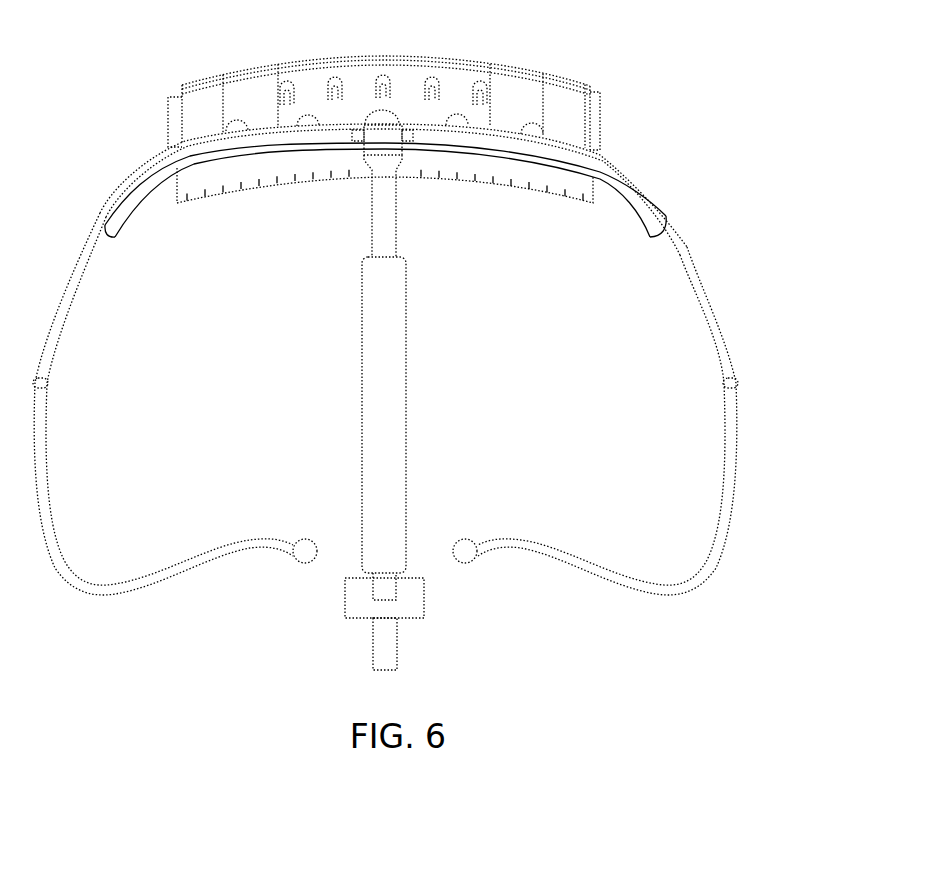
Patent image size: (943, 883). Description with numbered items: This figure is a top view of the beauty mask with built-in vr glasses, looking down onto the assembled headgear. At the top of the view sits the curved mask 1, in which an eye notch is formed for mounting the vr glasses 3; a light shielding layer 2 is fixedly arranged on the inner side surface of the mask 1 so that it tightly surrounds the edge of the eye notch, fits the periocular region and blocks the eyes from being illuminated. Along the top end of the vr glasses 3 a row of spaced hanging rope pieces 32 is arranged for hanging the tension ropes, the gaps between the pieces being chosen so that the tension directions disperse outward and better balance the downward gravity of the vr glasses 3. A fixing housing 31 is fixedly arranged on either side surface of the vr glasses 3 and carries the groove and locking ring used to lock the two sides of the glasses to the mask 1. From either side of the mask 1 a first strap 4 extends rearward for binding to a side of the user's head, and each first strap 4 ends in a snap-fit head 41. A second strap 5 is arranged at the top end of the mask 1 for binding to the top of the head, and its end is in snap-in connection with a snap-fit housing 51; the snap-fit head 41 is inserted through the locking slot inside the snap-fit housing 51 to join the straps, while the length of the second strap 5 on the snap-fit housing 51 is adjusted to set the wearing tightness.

The mask 1 is at (158, 168).
The light shielding layer 2 is at (257, 170).
The vr glasses 3 is at (410, 88).
The fixing housing 31 is at (575, 122).
The hanging rope piece 32 is at (435, 85).
The first strap 4 is at (692, 270).
The snap-fit head 41 is at (465, 550).
The second strap 5 is at (390, 335).
The snap-fit housing 51 is at (360, 592).